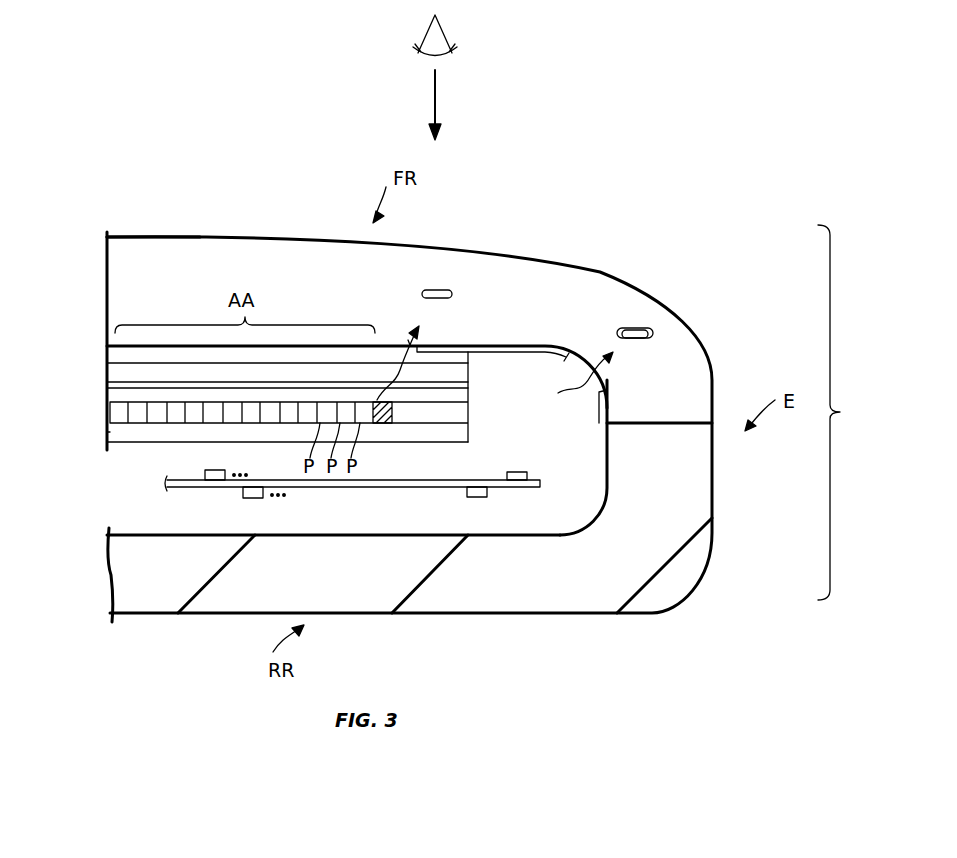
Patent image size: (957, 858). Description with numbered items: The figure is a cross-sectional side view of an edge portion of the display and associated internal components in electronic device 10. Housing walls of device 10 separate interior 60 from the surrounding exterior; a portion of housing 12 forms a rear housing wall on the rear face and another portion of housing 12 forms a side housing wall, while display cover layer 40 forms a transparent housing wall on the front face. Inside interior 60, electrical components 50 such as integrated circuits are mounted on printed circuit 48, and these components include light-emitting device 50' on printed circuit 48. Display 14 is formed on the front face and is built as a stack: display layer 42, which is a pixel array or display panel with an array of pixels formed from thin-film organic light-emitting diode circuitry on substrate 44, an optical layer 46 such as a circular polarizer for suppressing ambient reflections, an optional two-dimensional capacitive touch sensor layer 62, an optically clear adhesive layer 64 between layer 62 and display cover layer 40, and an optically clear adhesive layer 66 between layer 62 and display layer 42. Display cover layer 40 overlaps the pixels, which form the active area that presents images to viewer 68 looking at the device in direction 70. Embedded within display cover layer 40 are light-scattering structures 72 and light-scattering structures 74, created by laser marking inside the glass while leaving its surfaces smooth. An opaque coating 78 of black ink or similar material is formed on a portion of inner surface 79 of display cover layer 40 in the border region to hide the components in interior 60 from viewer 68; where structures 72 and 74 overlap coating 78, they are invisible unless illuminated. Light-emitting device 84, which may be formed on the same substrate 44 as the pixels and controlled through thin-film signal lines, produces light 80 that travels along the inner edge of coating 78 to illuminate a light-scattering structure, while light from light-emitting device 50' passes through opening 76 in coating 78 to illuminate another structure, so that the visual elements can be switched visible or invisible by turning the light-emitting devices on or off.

The electronic device 10 is at (843, 412).
The housing 12 is at (644, 600).
The display 14 is at (277, 222).
The display cover layer 40 is at (150, 245).
The display layer 42 is at (95, 388).
The substrate 44 is at (121, 444).
The optical layer 46 is at (105, 443).
The printed circuit 48 is at (345, 487).
The electrical components 50 is at (346, 491).
The light-emitting device 50' is at (552, 467).
The interior 60 is at (478, 525).
The capacitive touch sensor layer 62 is at (108, 364).
The optically clear adhesive layer 64 is at (108, 347).
The optically clear adhesive layer 66 is at (108, 383).
The viewer 68 is at (444, 36).
The direction 70 is at (436, 105).
The light-scattering structures 72 is at (452, 292).
The light-scattering structures 74 is at (648, 336).
The opening 76 is at (608, 376).
The opaque coating 78 is at (525, 352).
The inner surface 79 is at (482, 346).
The light 80 is at (410, 343).
The light-emitting device 84 is at (387, 423).